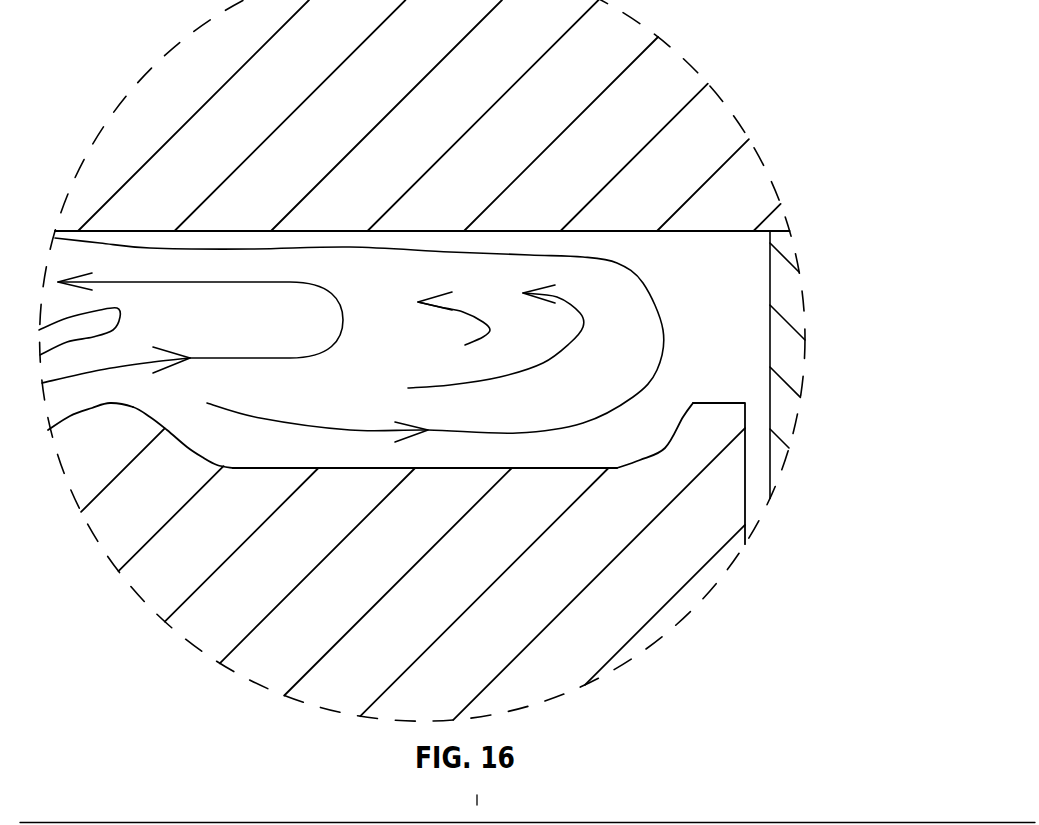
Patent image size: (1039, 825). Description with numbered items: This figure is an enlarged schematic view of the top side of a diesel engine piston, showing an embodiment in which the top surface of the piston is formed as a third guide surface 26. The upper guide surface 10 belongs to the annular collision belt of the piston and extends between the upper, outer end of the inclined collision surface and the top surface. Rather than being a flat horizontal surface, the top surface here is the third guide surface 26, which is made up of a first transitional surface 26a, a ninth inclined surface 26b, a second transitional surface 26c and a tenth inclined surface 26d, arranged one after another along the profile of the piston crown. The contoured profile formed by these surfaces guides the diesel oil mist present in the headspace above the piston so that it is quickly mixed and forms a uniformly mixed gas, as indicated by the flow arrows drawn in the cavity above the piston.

The upper guide surface 10 is at (133, 407).
The third guide surface 26 is at (508, 494).
The first transitional surface 26a is at (202, 457).
The ninth inclined surface 26b is at (410, 468).
The second transitional surface 26c is at (665, 448).
The tenth inclined surface 26d is at (723, 403).